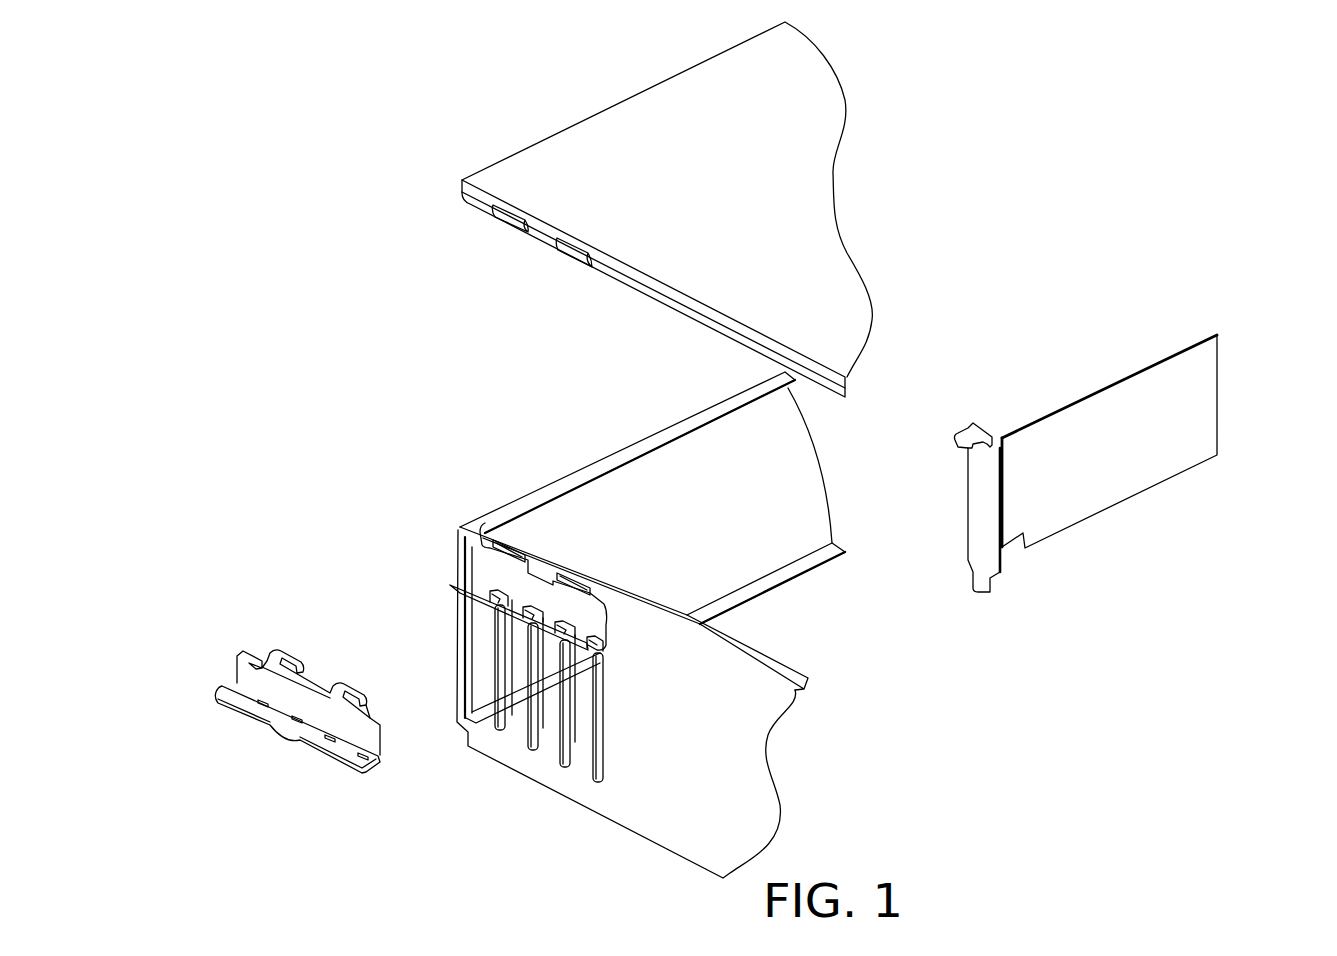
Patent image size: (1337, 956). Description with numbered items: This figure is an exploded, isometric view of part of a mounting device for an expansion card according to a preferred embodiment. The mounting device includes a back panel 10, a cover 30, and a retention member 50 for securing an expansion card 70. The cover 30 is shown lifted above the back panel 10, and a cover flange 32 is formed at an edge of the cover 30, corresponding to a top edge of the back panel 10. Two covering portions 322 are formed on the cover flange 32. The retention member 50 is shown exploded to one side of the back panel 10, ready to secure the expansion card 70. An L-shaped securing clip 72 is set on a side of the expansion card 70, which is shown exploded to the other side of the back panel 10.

The back panel 10 is at (628, 802).
The cover 30 is at (605, 167).
The cover flange 32 is at (635, 280).
The covering portions 322 is at (508, 218).
The retention member 50 is at (233, 690).
The expansion card 70 is at (1178, 390).
The L-shaped securing clip 72 is at (988, 572).